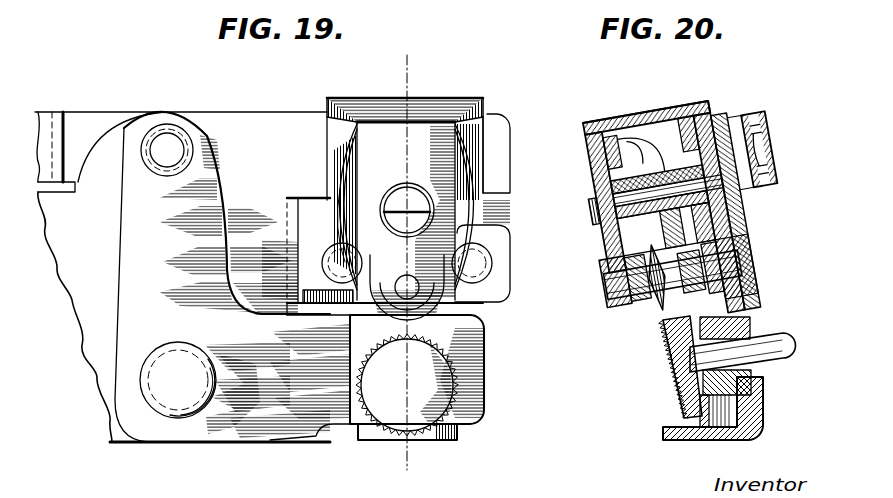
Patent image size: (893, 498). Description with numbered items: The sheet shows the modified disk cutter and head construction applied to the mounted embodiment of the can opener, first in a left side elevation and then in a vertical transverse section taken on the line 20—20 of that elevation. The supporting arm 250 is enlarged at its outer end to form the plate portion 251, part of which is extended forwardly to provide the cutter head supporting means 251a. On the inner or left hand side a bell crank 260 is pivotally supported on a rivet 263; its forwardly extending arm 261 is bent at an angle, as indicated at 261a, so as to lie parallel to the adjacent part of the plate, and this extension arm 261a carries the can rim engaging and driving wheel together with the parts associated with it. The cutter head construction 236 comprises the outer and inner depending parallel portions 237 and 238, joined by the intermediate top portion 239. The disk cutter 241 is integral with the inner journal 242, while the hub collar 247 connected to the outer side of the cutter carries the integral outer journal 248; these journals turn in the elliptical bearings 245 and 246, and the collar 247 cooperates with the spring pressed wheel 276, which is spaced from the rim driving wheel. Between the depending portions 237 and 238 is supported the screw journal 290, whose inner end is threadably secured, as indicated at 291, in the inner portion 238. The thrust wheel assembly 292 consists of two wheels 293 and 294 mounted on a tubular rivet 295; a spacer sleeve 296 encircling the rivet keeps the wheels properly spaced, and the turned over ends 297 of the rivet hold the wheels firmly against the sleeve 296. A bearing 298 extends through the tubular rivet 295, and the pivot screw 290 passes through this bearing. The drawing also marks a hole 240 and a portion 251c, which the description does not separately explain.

In FIG. 19, the section line 20 is at (403, 75).
In FIG. 19, the cutter head construction 236 is at (421, 98).
In FIG. 20, the cutter head construction 236 is at (636, 110).
In FIG. 19, the outer depending parallel portion 237 is at (333, 122).
In FIG. 20, the outer depending parallel portion 237 is at (752, 231).
In FIG. 19, the inner depending parallel portion 238 is at (410, 138).
In FIG. 20, the inner depending parallel portion 238 is at (600, 170).
In FIG. 19, the intermediate top portion 239 is at (449, 104).
In FIG. 20, the intermediate top portion 239 is at (677, 116).
In FIG. 19, the hole 240 is at (340, 258).
In FIG. 19, the disk cutter 241 is at (445, 306).
In FIG. 20, the disk cutter 241 is at (653, 304).
In FIG. 19, the inner journal 242 is at (402, 290).
In FIG. 20, the inner journal 242 is at (638, 288).
In FIG. 19, the elliptical bearing 245 is at (410, 272).
In FIG. 20, the elliptical bearing 245 is at (606, 272).
In FIG. 20, the elliptical bearing 246 is at (752, 249).
In FIG. 20, the hub collar 247 is at (757, 290).
In FIG. 20, the outer journal 248 is at (757, 270).
In FIG. 19, the supporting arm 250 is at (90, 293).
In FIG. 19, the plate portion 251 is at (238, 140).
In FIG. 20, the cutter head supporting means 251a is at (738, 118).
In FIG. 20, the shaft 251c is at (757, 298).
In FIG. 19, the bell crank 260 is at (143, 241).
In FIG. 19, the forwardly extending arm 261 is at (305, 408).
In FIG. 19, the extension arm 261a is at (470, 400).
In FIG. 20, the extension arm 261a is at (764, 410).
In FIG. 19, the rivet 263 is at (193, 405).
In FIG. 19, the spring pressed wheel 276 is at (470, 330).
In FIG. 20, the spring pressed wheel 276 is at (710, 412).
In FIG. 19, the screw journal 290 is at (395, 198).
In FIG. 20, the screw journal 290 is at (602, 188).
In FIG. 20, the threaded securing 291 is at (600, 215).
In FIG. 20, the thrust wheel assembly 292 is at (655, 147).
In FIG. 19, the thrust wheel 293 is at (340, 188).
In FIG. 20, the thrust wheel 293 is at (597, 120).
In FIG. 19, the thrust wheel 294 is at (342, 146).
In FIG. 20, the thrust wheel 294 is at (690, 125).
In FIG. 20, the tubular rivet 295 is at (606, 243).
In FIG. 20, the spacer sleeve 296 is at (600, 152).
In FIG. 20, the turned over ends 297 is at (748, 212).
In FIG. 20, the bearing 298 is at (648, 166).